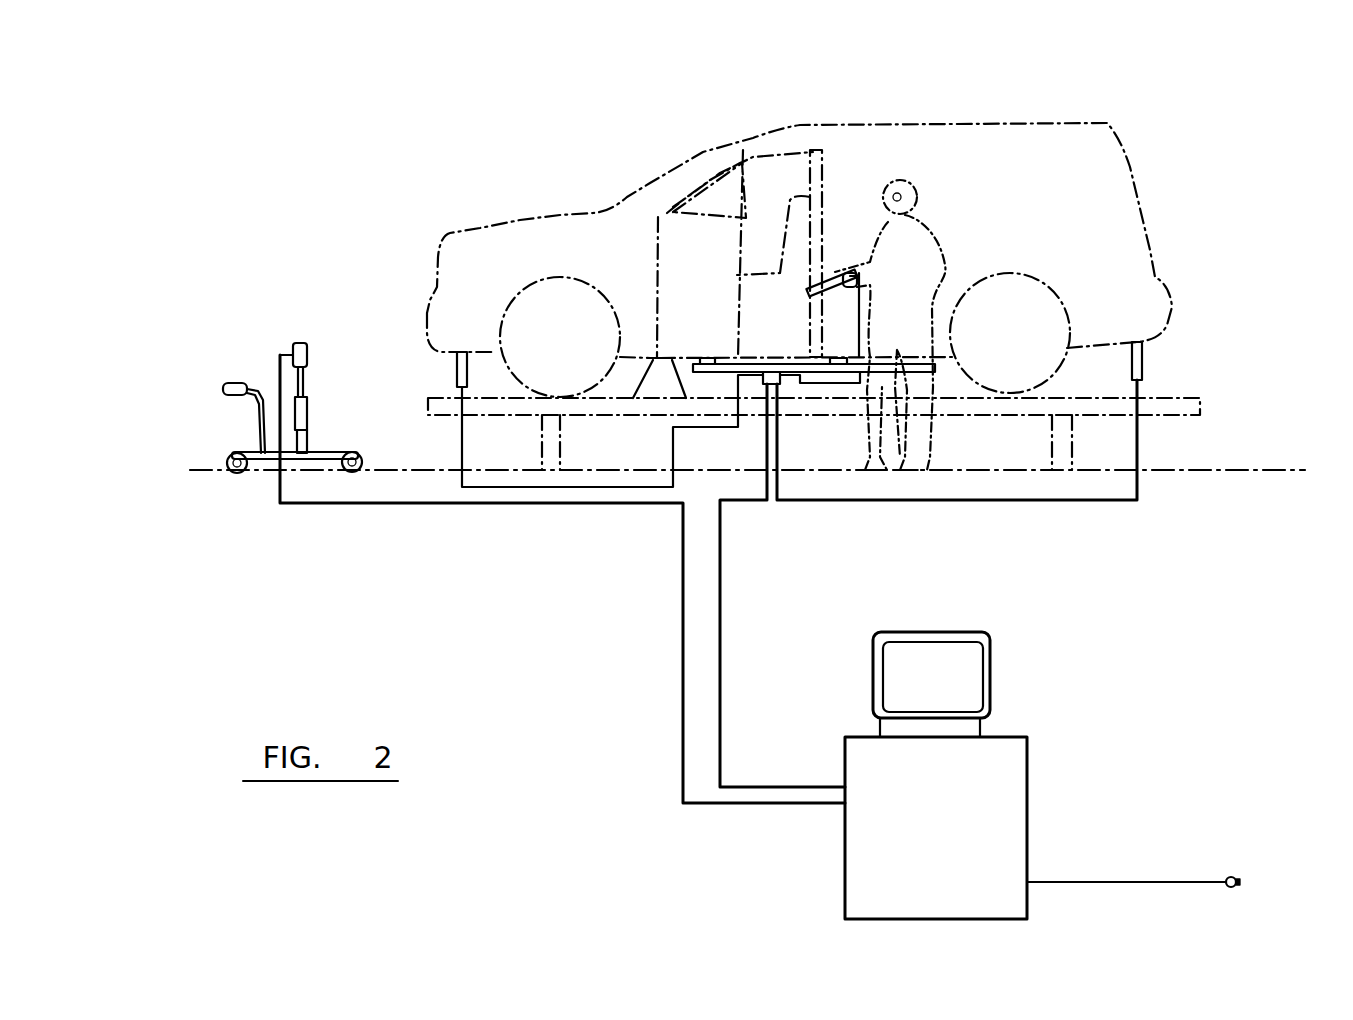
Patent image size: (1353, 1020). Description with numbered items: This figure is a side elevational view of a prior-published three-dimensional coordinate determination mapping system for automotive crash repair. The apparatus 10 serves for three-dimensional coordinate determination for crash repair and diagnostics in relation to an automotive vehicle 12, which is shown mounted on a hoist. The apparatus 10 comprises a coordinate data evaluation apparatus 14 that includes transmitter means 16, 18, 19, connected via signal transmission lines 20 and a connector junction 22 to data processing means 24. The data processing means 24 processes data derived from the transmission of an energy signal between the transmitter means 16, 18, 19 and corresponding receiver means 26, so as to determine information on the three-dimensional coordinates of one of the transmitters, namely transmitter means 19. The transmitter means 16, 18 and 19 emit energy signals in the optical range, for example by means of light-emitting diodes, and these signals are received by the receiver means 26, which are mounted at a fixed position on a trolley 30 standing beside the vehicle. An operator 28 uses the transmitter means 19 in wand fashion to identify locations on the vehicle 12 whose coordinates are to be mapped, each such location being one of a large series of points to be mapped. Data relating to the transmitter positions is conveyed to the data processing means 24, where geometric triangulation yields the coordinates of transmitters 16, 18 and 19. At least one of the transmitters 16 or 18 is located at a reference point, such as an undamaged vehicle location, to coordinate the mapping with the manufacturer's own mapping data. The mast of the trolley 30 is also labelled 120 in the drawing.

The apparatus 10 is at (1170, 645).
The automotive vehicle 12 is at (960, 122).
The coordinate data evaluation apparatus 14 is at (510, 558).
The transmitter means 16 is at (1143, 358).
The transmitter means 18 is at (457, 370).
The transmitter means 19 is at (850, 262).
The signal transmission lines 20 is at (722, 605).
The connector junction 22 is at (770, 362).
The data processing means 24 is at (1042, 757).
The receiver means 26 is at (288, 335).
The operator 28 is at (925, 265).
The trolley 30 is at (258, 455).
The jack mast 120 is at (288, 397).